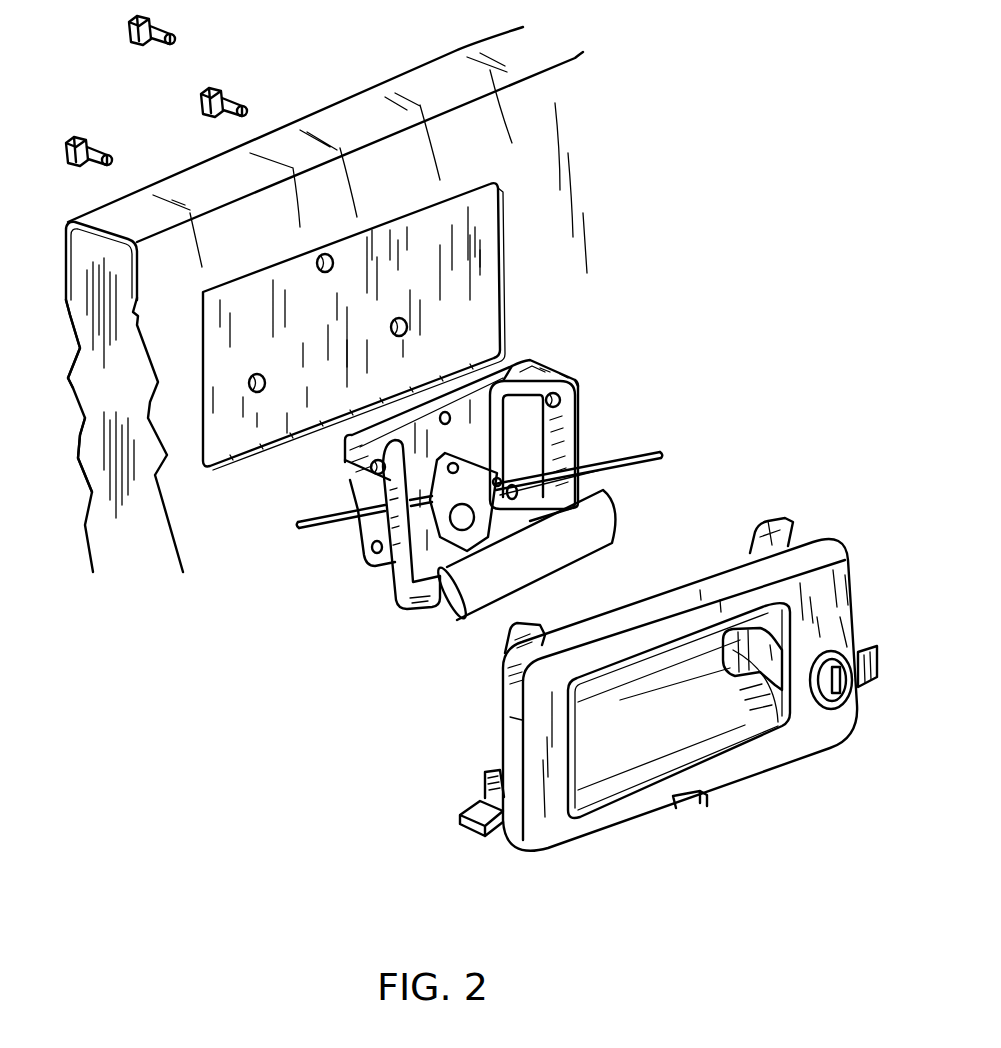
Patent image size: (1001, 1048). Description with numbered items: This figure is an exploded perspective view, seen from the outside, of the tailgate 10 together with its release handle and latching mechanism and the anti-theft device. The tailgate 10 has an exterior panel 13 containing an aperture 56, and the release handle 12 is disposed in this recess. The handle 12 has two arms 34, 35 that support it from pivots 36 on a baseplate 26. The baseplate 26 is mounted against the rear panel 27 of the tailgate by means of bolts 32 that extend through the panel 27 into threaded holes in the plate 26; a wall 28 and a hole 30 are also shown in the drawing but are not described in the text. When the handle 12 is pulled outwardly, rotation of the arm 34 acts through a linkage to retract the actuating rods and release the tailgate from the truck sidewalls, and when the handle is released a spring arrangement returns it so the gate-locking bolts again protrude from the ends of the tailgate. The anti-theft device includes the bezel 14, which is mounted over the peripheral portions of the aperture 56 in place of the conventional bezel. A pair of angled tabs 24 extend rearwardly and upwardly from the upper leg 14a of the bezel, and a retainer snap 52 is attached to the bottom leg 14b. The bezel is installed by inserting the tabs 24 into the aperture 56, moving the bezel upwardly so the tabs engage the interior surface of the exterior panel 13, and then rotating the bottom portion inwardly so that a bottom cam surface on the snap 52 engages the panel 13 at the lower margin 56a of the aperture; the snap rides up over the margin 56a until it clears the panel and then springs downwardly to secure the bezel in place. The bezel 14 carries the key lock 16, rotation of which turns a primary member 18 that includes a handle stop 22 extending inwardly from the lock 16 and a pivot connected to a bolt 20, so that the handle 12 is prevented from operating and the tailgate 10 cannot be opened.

The tailgate 10 is at (153, 537).
The release handle 12 is at (607, 510).
The exterior panel 13 is at (230, 519).
The bezel 14 is at (560, 830).
The upper leg 14a is at (663, 620).
The bottom leg 14b is at (760, 758).
The key lock 16 is at (843, 687).
The primary member 18 is at (870, 653).
The bolt 20 is at (480, 810).
The handle stop 22 is at (740, 647).
The angled tabs 24 is at (780, 538).
The baseplate 26 is at (360, 525).
The rear panel 27 is at (75, 362).
The frame front wall 28 is at (98, 428).
The mounting hole 30 is at (401, 318).
The bolts 32 is at (222, 98).
The arm 34 is at (560, 443).
The arm 35 is at (393, 578).
The pivots 36 is at (371, 469).
The retainer snap 52 is at (693, 803).
The aperture 56 is at (486, 292).
The lower margin 56a is at (287, 440).